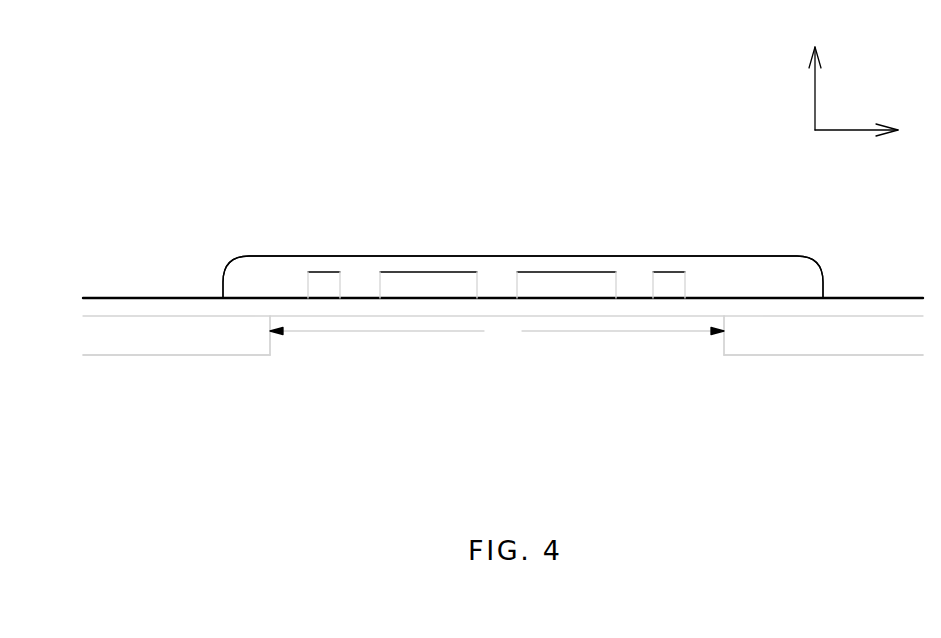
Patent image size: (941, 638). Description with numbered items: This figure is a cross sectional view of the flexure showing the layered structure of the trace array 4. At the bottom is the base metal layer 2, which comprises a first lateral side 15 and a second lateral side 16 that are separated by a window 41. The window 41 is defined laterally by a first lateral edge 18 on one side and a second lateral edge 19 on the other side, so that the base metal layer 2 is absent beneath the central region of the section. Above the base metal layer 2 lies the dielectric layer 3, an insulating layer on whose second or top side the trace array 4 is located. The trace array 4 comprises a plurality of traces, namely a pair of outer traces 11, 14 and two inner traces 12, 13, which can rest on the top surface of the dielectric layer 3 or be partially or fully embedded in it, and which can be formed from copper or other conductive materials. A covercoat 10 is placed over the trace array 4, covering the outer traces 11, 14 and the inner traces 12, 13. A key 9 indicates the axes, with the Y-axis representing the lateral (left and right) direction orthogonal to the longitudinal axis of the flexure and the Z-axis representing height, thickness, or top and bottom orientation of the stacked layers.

The base metal layer 2 is at (139, 340).
The dielectric layer 3 is at (123, 305).
The trace array 4 is at (259, 214).
The key 9 is at (758, 112).
The covercoat 10 is at (785, 265).
The outer trace 11 is at (324, 285).
The inner trace 12 is at (428, 285).
The inner trace 13 is at (566, 285).
The outer trace 14 is at (669, 285).
The first lateral side 15 is at (247, 346).
The second lateral side 16 is at (757, 343).
The first lateral edge 18 is at (266, 338).
The second lateral edge 19 is at (723, 342).
The window 41 is at (497, 331).